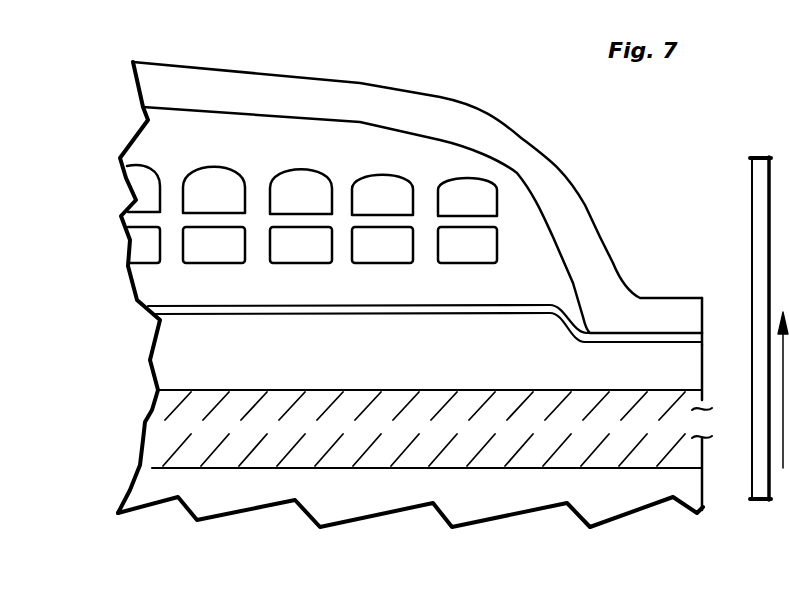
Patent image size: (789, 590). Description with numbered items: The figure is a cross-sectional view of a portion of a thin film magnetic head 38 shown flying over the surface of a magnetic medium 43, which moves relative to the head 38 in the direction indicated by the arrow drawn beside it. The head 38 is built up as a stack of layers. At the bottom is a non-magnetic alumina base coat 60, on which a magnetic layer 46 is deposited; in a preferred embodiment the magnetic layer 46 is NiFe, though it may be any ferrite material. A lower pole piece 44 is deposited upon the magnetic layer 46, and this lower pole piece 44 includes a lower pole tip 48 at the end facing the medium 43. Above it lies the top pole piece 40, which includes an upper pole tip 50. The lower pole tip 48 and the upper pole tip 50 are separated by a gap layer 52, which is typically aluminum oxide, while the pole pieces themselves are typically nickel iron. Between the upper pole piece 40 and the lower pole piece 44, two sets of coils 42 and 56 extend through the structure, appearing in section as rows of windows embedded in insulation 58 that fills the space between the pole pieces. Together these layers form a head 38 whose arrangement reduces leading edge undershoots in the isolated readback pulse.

The thin film magnetic head 38 is at (492, 98).
The top pole piece 40 is at (152, 80).
The coils 42 is at (227, 173).
The magnetic medium 43 is at (748, 183).
The lower pole piece 44 is at (167, 351).
The magnetic layer 46 is at (158, 413).
The lower pole tip 48 is at (688, 372).
The upper pole tip 50 is at (703, 317).
The gap layer 52 is at (690, 345).
The coils 56 is at (283, 258).
The insulation 58 is at (357, 135).
The alumina base coat 60 is at (145, 487).